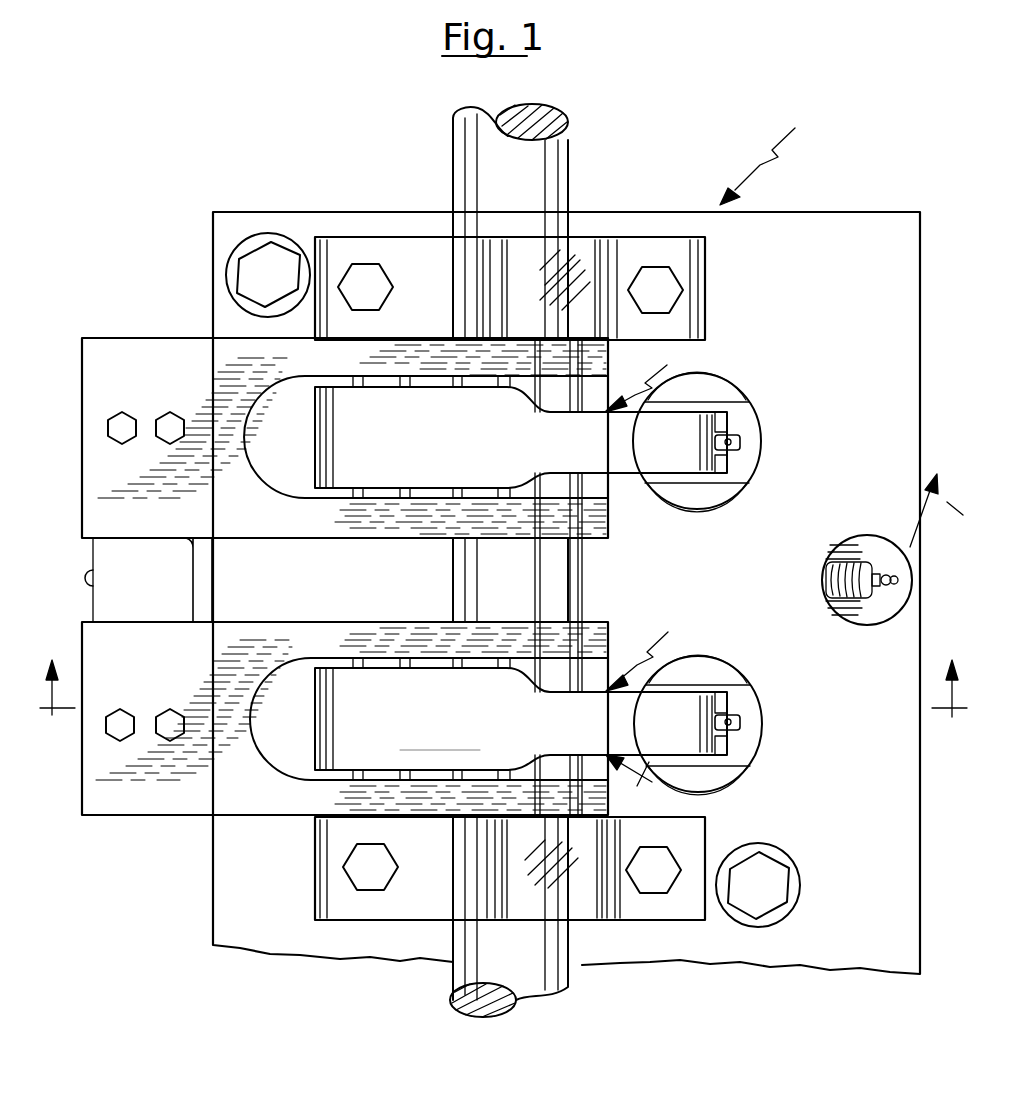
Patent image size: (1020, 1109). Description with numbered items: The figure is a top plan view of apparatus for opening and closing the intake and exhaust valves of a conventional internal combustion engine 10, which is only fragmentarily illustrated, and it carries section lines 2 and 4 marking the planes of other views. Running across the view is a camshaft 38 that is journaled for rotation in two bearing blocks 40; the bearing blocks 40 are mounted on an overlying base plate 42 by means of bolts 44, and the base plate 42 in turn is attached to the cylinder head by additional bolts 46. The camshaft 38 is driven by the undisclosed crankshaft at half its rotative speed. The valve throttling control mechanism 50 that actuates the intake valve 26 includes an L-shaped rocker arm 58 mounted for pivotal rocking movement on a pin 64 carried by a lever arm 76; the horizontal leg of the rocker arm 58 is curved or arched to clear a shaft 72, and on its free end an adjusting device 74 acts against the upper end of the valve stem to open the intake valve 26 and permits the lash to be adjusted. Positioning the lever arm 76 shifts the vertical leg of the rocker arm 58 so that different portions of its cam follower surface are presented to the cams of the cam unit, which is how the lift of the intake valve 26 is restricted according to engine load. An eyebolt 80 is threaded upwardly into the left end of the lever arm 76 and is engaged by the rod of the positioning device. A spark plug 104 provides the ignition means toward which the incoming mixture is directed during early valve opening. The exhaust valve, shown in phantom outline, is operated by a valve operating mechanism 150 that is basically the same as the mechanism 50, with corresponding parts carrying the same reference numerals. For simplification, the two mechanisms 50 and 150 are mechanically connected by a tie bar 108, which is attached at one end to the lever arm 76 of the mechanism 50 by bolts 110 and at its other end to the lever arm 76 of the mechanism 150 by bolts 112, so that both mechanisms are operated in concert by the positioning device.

The internal combustion engine 10 is at (765, 155).
The intake valve 26 is at (752, 400).
The camshaft 38 is at (570, 173).
The bearing blocks 40 is at (418, 237).
The base plate 42 is at (877, 240).
The bolts 44 is at (387, 273).
The additional bolts 46 is at (254, 247).
The valve throttling control mechanism 50 is at (651, 651).
The rocker arm 58 is at (329, 506).
The pin 64 is at (380, 381).
The shaft 72 is at (560, 592).
The adjusting device 74 is at (741, 443).
The lever arm 76 is at (105, 337).
The eyebolt 80 is at (84, 578).
The spark plug 104 is at (860, 600).
The tie bar 108 is at (178, 592).
The bolts 110 is at (168, 742).
The bolts 112 is at (170, 411).
The valve operating mechanism 150 is at (653, 380).
The section line 2- 2 is at (503, 675).
The section line 4- 4 is at (789, 643).